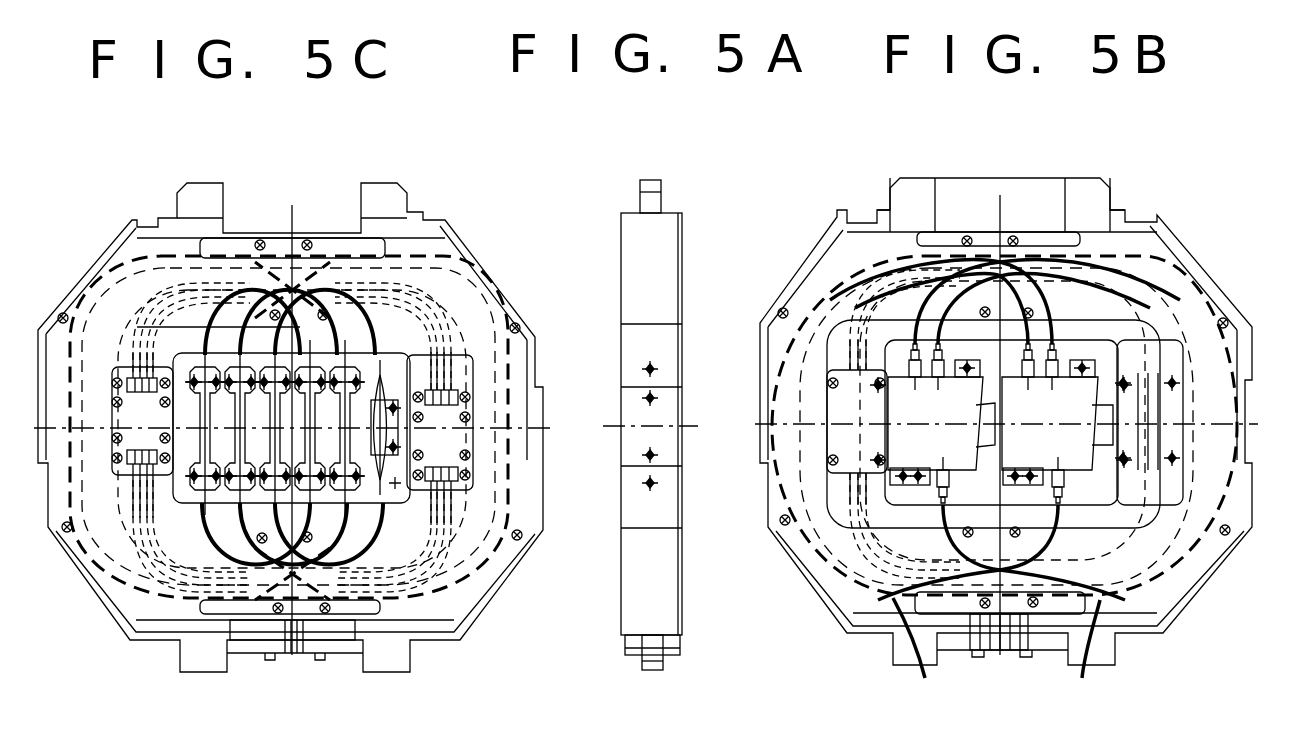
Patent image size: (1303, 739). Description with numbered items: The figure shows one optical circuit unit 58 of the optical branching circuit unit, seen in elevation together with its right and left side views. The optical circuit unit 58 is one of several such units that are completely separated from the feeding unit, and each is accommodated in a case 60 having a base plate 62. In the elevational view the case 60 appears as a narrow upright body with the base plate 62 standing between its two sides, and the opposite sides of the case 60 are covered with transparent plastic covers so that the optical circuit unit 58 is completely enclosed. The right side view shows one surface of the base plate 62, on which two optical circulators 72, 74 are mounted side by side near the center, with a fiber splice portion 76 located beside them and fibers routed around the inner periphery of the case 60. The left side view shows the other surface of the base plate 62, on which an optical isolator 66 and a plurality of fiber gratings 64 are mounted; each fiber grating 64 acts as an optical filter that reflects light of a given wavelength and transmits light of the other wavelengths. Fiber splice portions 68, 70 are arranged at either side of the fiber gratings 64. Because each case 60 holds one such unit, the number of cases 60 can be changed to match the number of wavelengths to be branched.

In FIG. 5A, the optical circuit unit 58 is at (685, 272).
In FIG. 5C, the case 60 is at (472, 215).
In FIG. 5A, the case 60 is at (637, 592).
In FIG. 5B, the case 60 is at (1006, 421).
In FIG. 5C, the base plate 62 is at (462, 310).
In FIG. 5B, the base plate 62 is at (1165, 303).
In FIG. 5C, the fiber grating 64 is at (268, 367).
In FIG. 5C, the optical isolator 66 is at (387, 400).
In FIG. 5C, the fiber splice portion 68 is at (140, 410).
In FIG. 5C, the fiber splice portion 70 is at (455, 437).
In FIG. 5B, the optical circulator 72 is at (902, 397).
In FIG. 5B, the optical circulator 74 is at (1085, 392).
In FIG. 5B, the fiber splice portion 76 is at (850, 436).